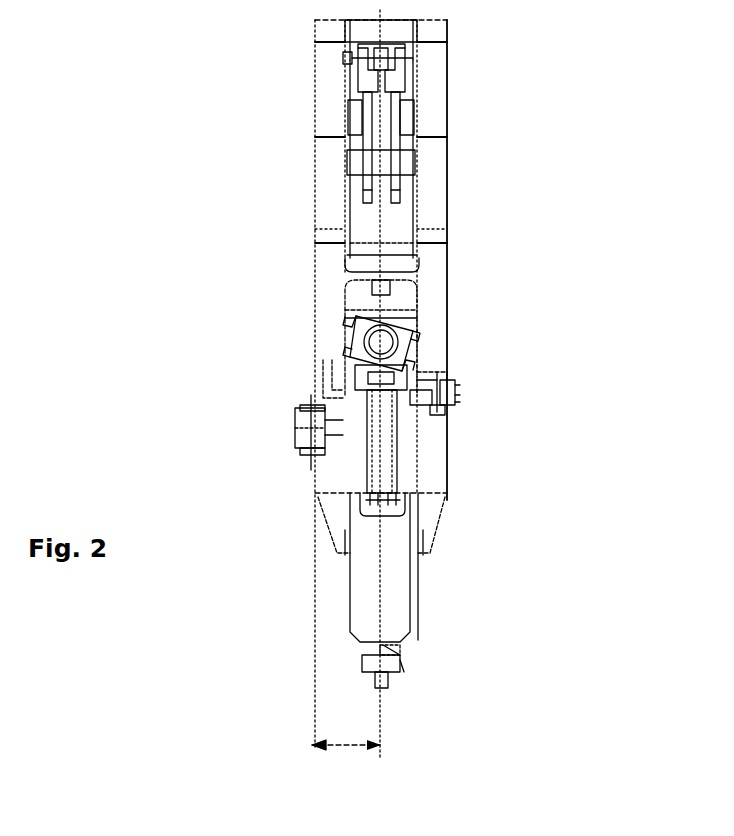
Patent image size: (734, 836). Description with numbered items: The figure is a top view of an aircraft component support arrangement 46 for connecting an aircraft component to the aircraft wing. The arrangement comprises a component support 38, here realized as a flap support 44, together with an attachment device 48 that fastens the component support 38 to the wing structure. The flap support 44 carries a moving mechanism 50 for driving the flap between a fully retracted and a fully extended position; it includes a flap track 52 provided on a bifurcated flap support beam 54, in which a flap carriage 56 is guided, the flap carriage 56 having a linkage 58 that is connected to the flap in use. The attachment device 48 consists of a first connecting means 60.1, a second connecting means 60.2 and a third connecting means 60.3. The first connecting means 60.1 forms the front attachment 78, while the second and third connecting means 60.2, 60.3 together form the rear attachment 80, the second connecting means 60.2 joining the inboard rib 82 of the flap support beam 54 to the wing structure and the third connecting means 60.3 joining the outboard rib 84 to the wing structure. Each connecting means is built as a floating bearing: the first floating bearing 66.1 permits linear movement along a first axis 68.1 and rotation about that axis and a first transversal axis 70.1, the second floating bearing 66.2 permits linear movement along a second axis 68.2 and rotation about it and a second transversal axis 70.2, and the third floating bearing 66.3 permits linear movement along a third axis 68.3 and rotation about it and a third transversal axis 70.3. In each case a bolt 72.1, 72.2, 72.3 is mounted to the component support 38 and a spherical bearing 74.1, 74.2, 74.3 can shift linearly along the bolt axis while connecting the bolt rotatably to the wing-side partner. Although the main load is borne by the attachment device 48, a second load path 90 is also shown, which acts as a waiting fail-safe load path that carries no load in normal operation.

The component support 38 is at (520, 253).
The flap support 44 is at (320, 211).
The aircraft component support arrangement 46 is at (238, 168).
The attachment device 48 is at (357, 441).
The moving mechanism 50 is at (442, 167).
The flap track 52 is at (333, 125).
The flap support beam 54 is at (320, 325).
The flap carriage 56 is at (400, 203).
The linkage 58 is at (385, 132).
The first connecting means 60.1 is at (344, 672).
The second connecting means 60.2 is at (285, 437).
The third connecting means 60.3 is at (502, 382).
The first floating bearing 66.1 is at (420, 686).
The second floating bearing 66.2 is at (280, 425).
The third floating bearing 66.3 is at (480, 407).
The first axis 68.1 is at (396, 643).
The second axis 68.2 is at (311, 467).
The third axis 68.3 is at (449, 398).
The first transversal axis 70.1 is at (397, 652).
The second transversal axis 70.2 is at (444, 392).
The third transversal axis 70.3 is at (300, 410).
The bolt 72.1 is at (386, 688).
The bolt 72.2 is at (309, 450).
The bolt 72.3 is at (445, 420).
The spherical bearing 74.1 is at (405, 672).
The spherical bearing 74.2 is at (298, 420).
The spherical bearing 74.3 is at (437, 372).
The front attachment 78 is at (328, 663).
The rear attachment 80 is at (182, 412).
The inboard rib 82 is at (322, 184).
The outboard rib 84 is at (448, 65).
The second load path 90 is at (350, 325).